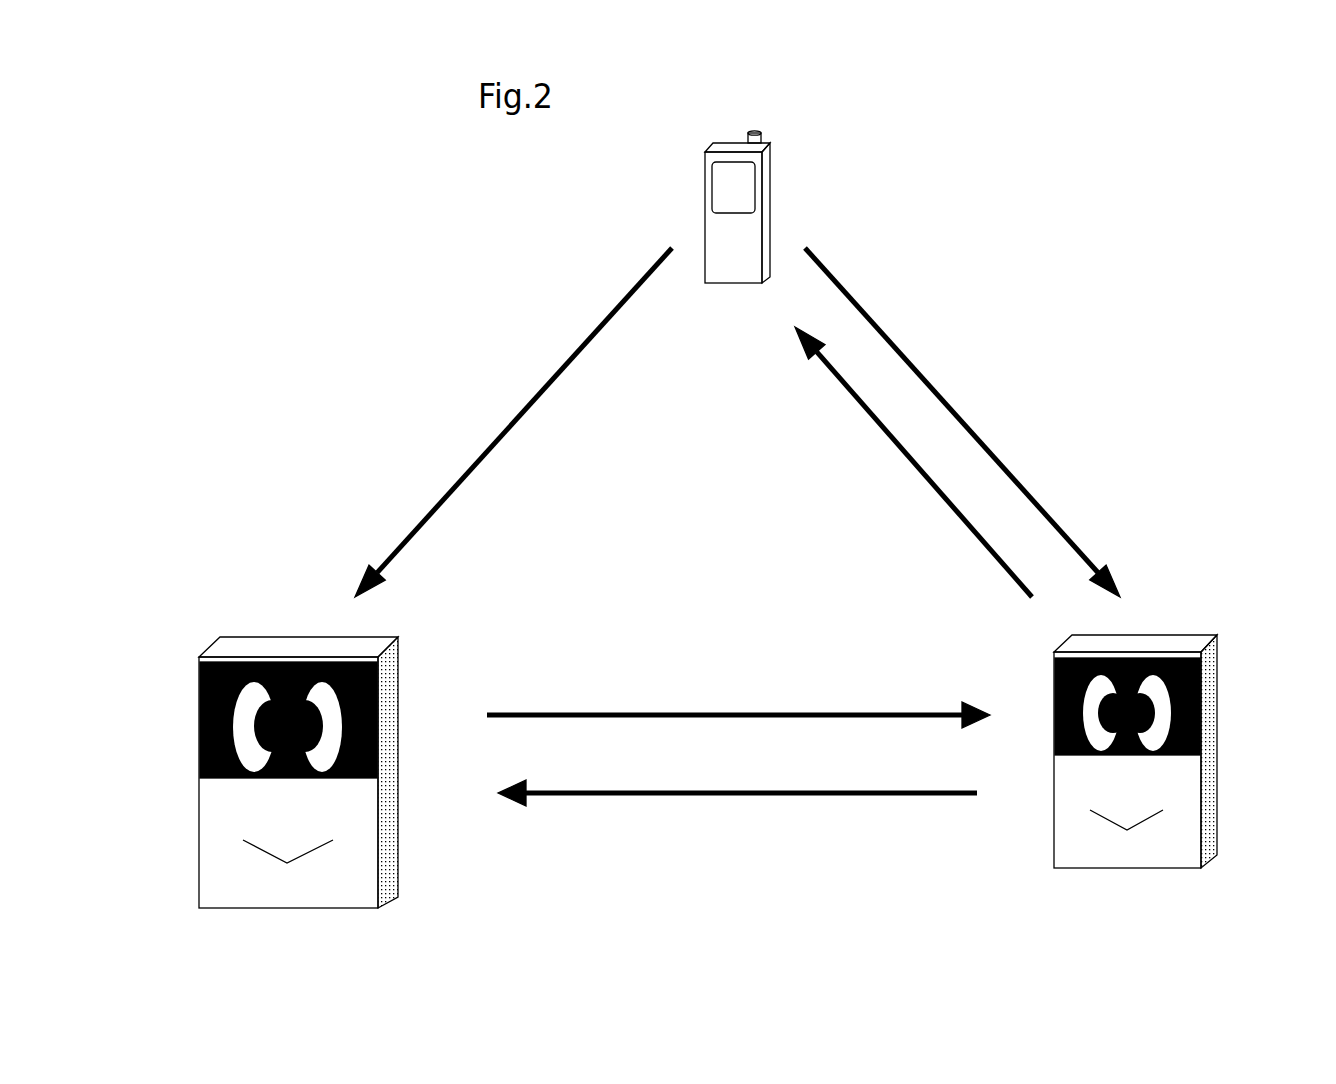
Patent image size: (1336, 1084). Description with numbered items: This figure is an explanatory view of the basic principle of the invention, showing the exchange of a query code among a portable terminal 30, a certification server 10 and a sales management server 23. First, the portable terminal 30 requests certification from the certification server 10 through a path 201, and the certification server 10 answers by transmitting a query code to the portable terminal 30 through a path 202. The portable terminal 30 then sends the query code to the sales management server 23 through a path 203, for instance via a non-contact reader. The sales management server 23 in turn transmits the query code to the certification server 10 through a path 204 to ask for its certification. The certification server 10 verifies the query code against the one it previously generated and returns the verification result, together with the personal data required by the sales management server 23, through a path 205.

The certification server 10 is at (1190, 828).
The sales management server 23 is at (217, 858).
The portable terminal 30 is at (755, 243).
The path 201 is at (943, 397).
The path 202 is at (860, 403).
The path 203 is at (472, 463).
The path 204 is at (688, 712).
The path 205 is at (773, 797).